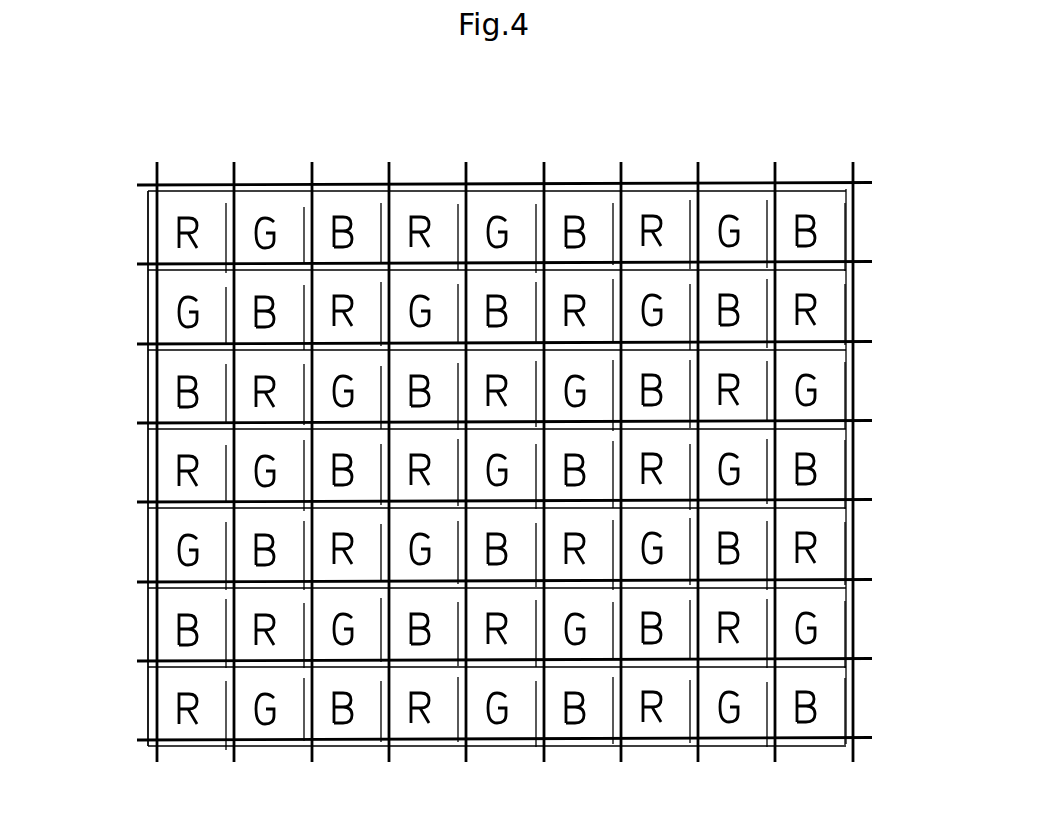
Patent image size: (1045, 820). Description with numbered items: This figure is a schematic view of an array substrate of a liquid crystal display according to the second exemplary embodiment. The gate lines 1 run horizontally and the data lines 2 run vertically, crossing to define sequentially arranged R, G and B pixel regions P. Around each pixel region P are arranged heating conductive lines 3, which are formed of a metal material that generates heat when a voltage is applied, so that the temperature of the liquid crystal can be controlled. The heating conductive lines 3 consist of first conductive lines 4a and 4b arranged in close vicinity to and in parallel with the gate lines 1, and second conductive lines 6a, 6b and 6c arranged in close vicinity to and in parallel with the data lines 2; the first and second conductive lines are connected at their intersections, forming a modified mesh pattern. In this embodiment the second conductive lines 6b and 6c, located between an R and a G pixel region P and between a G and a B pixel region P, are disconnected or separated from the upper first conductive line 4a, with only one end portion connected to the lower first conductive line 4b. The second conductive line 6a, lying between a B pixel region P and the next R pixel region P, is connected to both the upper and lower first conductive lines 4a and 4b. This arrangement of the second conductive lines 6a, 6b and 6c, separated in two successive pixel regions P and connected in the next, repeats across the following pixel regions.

The gate line 1 is at (147, 185).
The data line 2 is at (467, 174).
The heating conductive line 3 is at (147, 303).
The first conductive line 4a is at (722, 188).
The first conductive line 4b is at (826, 268).
The second conductive line 6a is at (147, 224).
The second conductive line 6b is at (226, 228).
The second conductive line 6c is at (304, 228).
The pixel region P is at (652, 198).